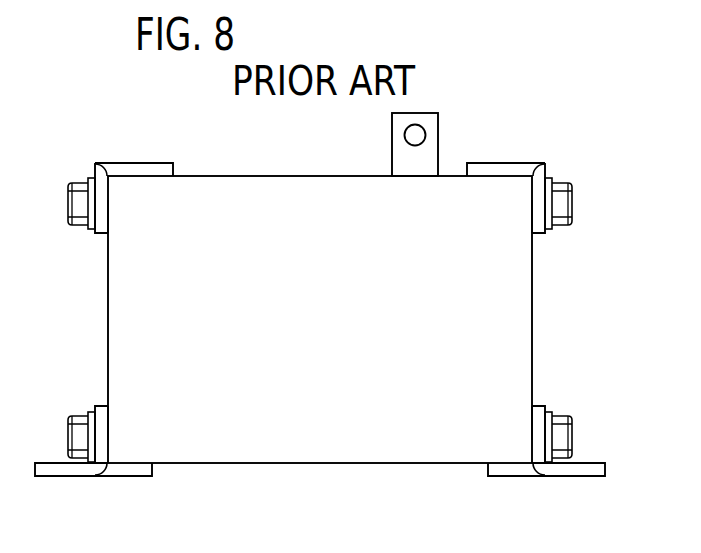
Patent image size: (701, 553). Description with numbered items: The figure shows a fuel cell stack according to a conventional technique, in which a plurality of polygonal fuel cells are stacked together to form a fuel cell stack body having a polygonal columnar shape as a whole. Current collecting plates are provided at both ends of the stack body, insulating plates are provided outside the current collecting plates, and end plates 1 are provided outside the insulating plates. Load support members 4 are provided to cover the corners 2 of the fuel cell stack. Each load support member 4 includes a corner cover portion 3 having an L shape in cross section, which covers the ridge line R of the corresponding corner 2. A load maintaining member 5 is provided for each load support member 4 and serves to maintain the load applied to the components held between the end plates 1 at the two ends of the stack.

The end plate 1 is at (320, 443).
The corner 2 is at (120, 185).
The corner cover portion 3 is at (108, 217).
The load support member 4 is at (145, 167).
The load maintaining member 5 is at (68, 203).
The ridge line R is at (107, 172).